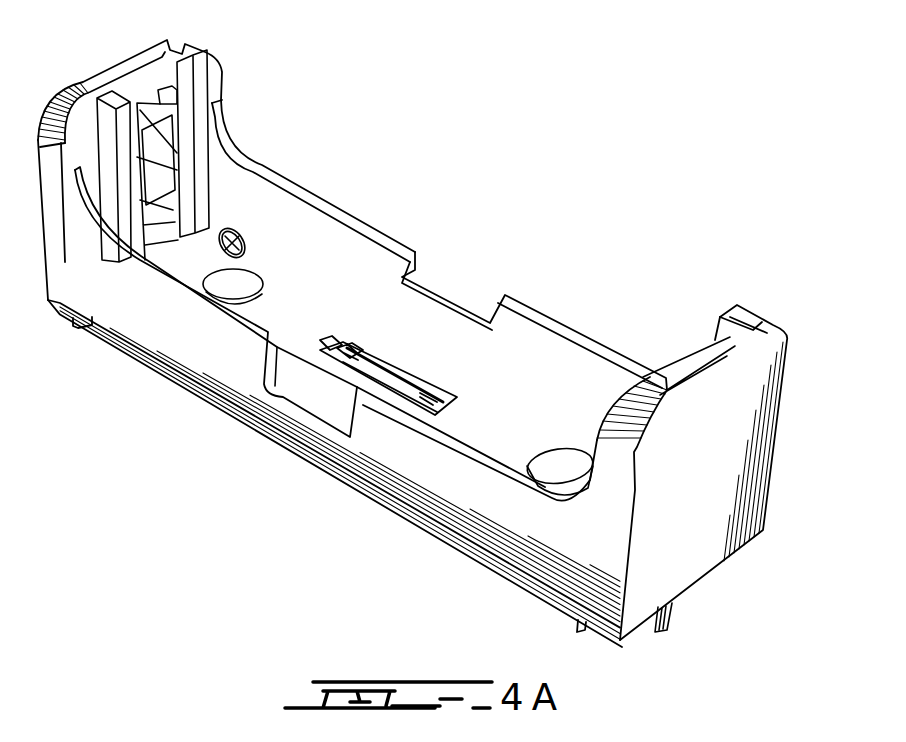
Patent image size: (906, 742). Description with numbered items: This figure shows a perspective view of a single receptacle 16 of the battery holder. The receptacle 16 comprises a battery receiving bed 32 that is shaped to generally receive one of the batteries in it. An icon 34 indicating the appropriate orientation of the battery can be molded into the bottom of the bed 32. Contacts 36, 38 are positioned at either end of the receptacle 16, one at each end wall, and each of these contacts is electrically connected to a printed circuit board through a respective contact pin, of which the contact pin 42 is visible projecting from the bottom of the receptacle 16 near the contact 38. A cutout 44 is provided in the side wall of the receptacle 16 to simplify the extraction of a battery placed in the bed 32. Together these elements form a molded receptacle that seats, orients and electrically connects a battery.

The receptacle 16 is at (248, 444).
The battery receiving bed 32 is at (548, 388).
The icon 34 is at (390, 372).
The contact 36 is at (155, 143).
The contact 38 is at (690, 355).
The contact pin 42 is at (672, 622).
The cutout 44 is at (320, 387).